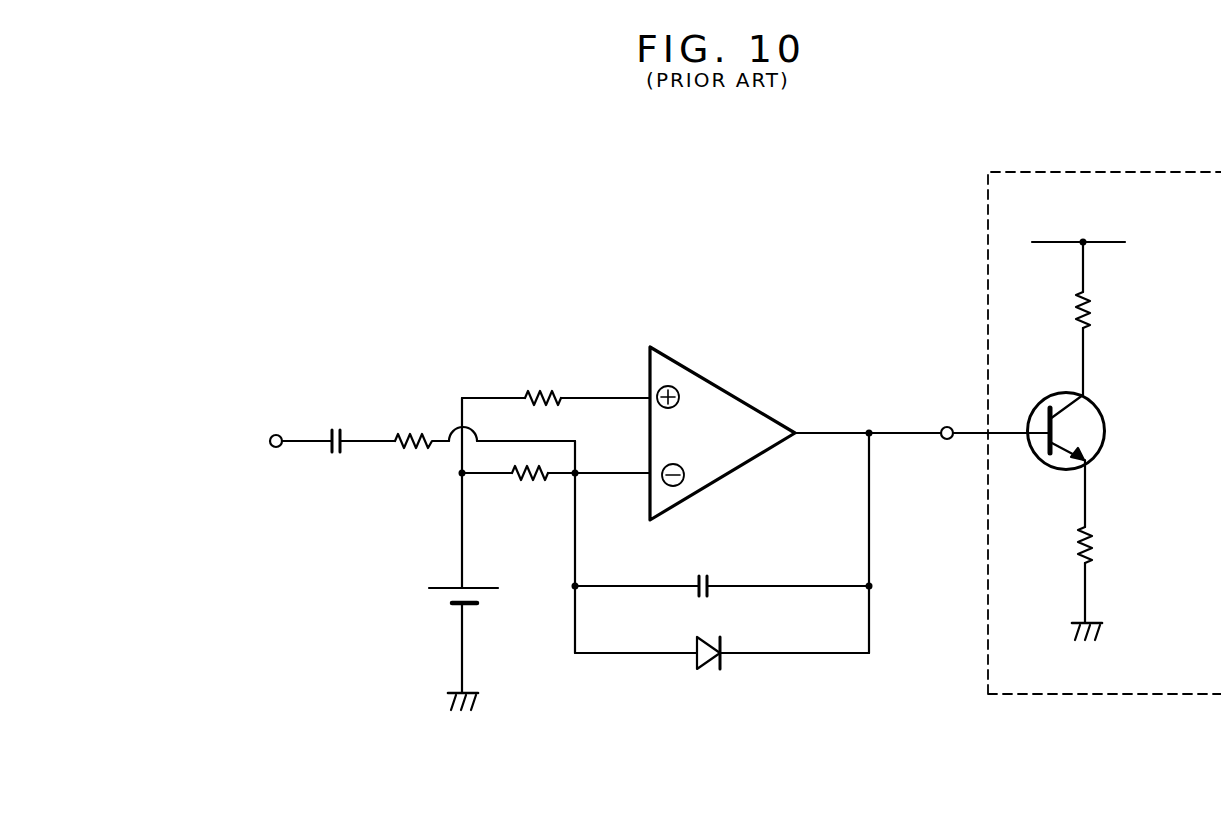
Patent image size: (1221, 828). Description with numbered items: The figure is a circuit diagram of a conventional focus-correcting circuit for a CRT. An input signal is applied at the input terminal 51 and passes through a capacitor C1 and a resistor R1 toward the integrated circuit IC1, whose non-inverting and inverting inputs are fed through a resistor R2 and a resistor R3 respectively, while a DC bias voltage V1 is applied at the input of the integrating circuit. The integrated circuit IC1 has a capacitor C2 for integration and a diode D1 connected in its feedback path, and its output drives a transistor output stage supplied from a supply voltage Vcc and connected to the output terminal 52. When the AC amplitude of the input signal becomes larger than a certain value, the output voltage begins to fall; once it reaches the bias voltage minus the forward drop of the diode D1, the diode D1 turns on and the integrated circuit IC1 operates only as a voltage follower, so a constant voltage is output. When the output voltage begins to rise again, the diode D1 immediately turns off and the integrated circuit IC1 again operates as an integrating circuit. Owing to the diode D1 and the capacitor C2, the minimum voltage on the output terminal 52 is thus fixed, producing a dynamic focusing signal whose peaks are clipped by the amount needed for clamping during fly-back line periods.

The input terminal 51 is at (277, 449).
The capacitor C1 is at (337, 428).
The resistor R1 is at (410, 452).
The resistor R2 is at (545, 392).
The resistor R3 is at (528, 481).
The integrated circuit IC1 is at (783, 422).
The capacitor for integration C2 is at (711, 573).
The diode D1 is at (694, 662).
The DC bias voltage V1 is at (449, 604).
The output terminal 52 is at (946, 426).
The supply voltage Vcc is at (1103, 317).